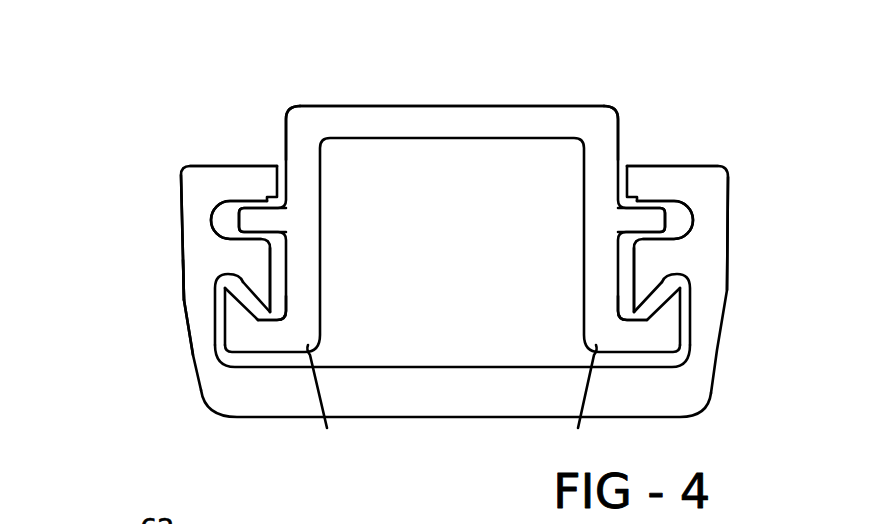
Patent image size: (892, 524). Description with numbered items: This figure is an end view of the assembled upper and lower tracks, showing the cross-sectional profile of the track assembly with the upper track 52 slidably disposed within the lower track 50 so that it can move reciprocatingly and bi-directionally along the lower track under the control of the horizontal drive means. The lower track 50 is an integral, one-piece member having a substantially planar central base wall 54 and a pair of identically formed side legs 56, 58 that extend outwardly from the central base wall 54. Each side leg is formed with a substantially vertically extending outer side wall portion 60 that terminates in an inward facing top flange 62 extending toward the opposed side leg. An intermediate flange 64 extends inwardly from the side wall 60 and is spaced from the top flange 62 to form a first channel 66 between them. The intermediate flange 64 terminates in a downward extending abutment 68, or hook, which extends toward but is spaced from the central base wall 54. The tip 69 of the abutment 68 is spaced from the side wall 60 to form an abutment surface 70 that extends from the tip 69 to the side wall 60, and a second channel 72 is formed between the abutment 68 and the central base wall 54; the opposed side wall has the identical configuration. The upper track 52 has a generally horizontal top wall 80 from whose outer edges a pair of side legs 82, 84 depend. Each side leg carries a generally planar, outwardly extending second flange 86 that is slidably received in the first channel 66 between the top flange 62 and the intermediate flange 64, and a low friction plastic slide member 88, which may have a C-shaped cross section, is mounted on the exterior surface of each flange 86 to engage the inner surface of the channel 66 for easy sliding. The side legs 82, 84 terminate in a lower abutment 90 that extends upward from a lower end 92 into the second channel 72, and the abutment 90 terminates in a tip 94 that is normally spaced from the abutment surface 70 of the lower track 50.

The lower track 50 is at (155, 316).
The upper track 52 is at (368, 78).
The central base wall 54 is at (456, 410).
The side leg 56 is at (194, 196).
The side leg 58 is at (745, 277).
The outer side wall portion 60 is at (182, 252).
The top flange 62 is at (250, 175).
The intermediate flange 64 is at (266, 261).
The first channel 66 is at (693, 212).
The abutment 68 is at (276, 303).
The tip 69 is at (270, 312).
The abutment surface 70 is at (244, 285).
The second channel 72 is at (665, 360).
The top wall 80 is at (407, 116).
The side leg 82 is at (298, 122).
The side leg 84 is at (593, 128).
The second flange 86 is at (257, 222).
The slide member 88 is at (228, 213).
The lower abutment 90 is at (238, 325).
The lower end 92 is at (327, 428).
The tip 94 is at (183, 280).